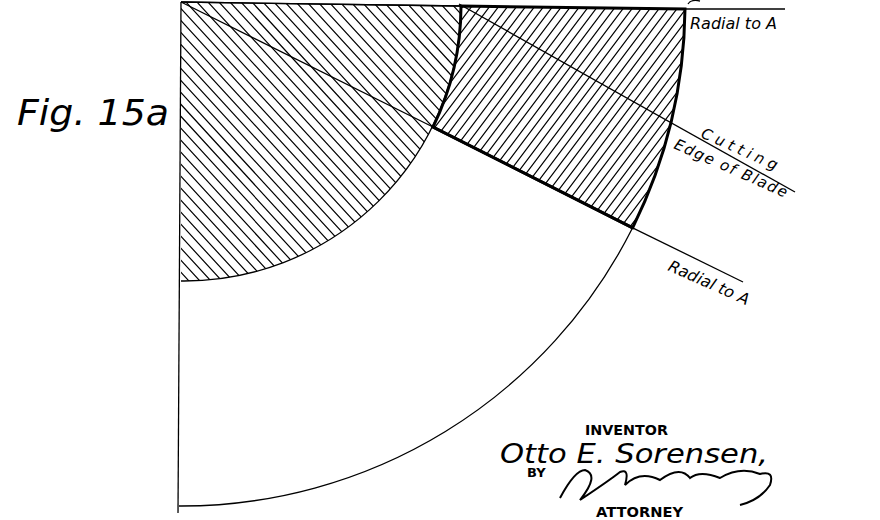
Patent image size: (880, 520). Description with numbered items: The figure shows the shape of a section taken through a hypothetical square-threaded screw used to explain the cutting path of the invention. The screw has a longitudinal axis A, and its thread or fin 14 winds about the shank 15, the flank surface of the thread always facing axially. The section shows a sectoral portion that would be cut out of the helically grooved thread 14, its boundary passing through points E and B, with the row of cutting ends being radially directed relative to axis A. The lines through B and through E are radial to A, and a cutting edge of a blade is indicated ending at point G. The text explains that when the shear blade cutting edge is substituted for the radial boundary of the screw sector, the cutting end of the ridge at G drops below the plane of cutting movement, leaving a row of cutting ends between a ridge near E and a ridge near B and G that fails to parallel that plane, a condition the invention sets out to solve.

The thread or fin 14 is at (207, 328).
The shank 15 is at (345, 188).
The longitudinal axis A is at (181, 3).
The point B is at (633, 229).
The point E is at (434, 129).
The point G is at (676, 119).